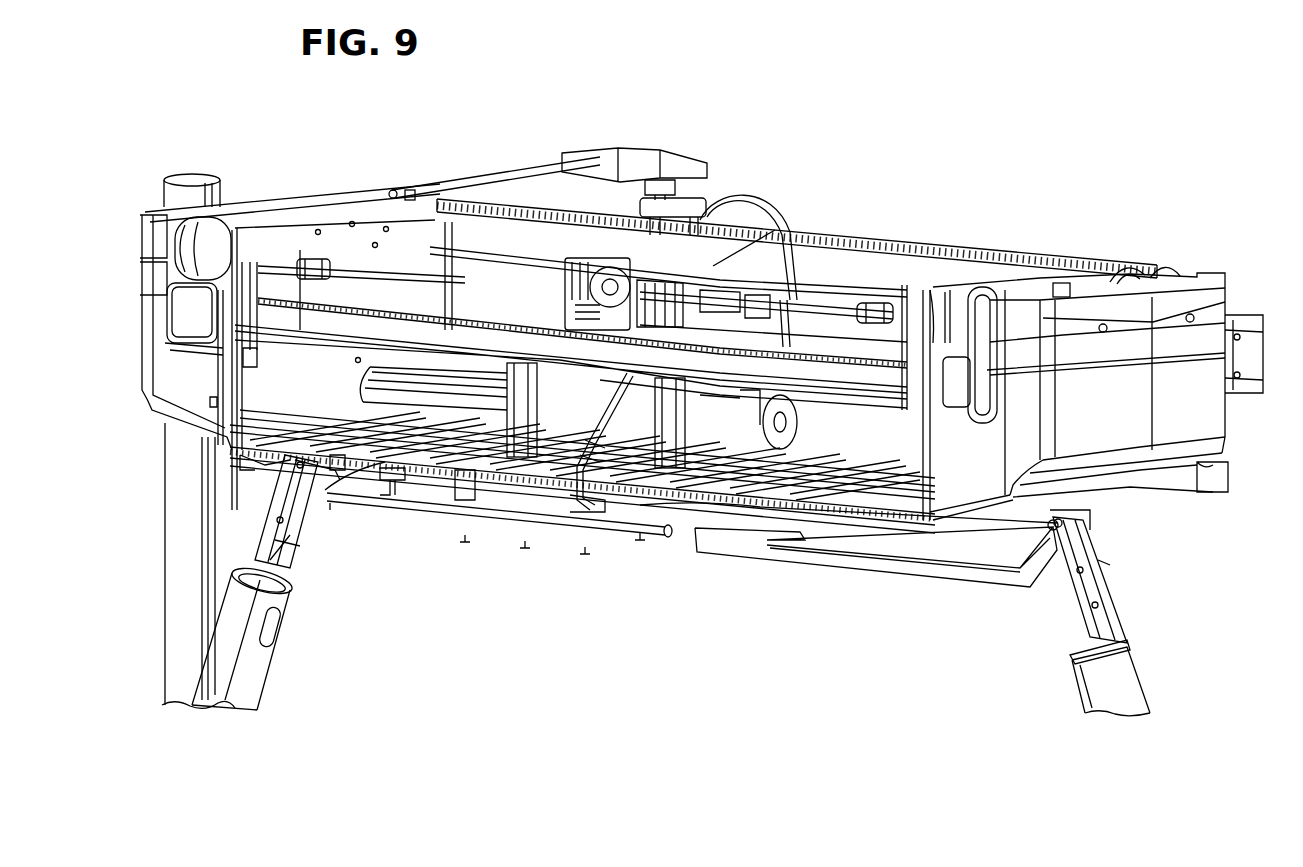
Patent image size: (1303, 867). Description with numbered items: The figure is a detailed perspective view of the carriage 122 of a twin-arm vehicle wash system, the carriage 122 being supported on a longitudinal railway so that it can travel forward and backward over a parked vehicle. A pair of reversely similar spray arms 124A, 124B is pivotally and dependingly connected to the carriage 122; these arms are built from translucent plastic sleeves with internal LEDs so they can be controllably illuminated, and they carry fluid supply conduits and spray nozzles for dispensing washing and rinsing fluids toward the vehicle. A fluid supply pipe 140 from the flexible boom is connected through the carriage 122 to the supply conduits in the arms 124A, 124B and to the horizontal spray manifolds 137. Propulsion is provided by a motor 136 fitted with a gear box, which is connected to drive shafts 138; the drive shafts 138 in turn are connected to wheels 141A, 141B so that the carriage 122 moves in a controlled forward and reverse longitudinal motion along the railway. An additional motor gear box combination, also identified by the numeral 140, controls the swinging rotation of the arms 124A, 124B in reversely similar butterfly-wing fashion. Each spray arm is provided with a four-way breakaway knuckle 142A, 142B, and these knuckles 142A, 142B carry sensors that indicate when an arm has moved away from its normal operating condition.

The carriage 122 is at (925, 232).
The spray arm 124A is at (263, 667).
The spray arm 124B is at (1090, 690).
The motor 136 is at (725, 250).
The horizontal spray manifold 137 is at (500, 540).
The drive shaft 138 is at (387, 271).
The fluid supply pipe 140 is at (452, 177).
The wheel 141A is at (207, 223).
The wheel 141B is at (1003, 290).
The four-way breakaway knuckle 142A is at (297, 527).
The four-way breakaway knuckle 142B is at (1097, 547).